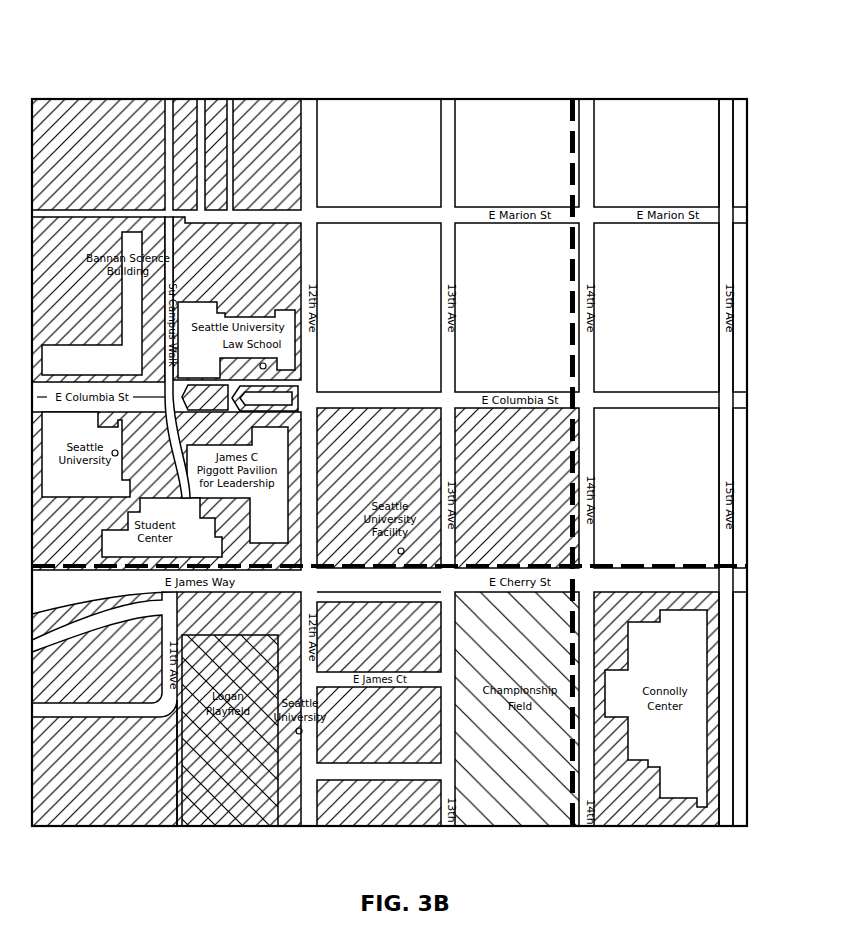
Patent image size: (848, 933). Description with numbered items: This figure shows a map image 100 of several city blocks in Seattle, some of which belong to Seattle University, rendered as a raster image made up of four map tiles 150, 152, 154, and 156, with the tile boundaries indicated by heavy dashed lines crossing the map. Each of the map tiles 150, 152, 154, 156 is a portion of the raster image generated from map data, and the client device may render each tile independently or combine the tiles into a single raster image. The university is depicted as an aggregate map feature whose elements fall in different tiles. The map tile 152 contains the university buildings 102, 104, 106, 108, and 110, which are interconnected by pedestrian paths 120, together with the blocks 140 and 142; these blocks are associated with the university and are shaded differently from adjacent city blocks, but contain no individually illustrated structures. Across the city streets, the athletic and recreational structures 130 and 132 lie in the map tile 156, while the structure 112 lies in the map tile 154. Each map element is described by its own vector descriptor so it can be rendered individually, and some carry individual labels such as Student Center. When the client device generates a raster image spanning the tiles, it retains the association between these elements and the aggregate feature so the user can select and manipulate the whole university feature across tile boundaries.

The map image 100 is at (300, 72).
The university building 102 is at (96, 367).
The university building 104 is at (185, 368).
The university building 106 is at (81, 494).
The university building 108 is at (184, 553).
The university building 110 is at (258, 526).
The athletic or recreational structure 112 is at (670, 751).
The pedestrian paths 120 is at (186, 427).
The athletic or recreational structure 130 is at (247, 827).
The athletic or recreational structure 132 is at (520, 808).
The block 140 is at (338, 422).
The block 142 is at (463, 420).
The map tile 150 is at (631, 123).
The map tile 152 is at (483, 126).
The map tile 154 is at (727, 673).
The map tile 156 is at (379, 802).